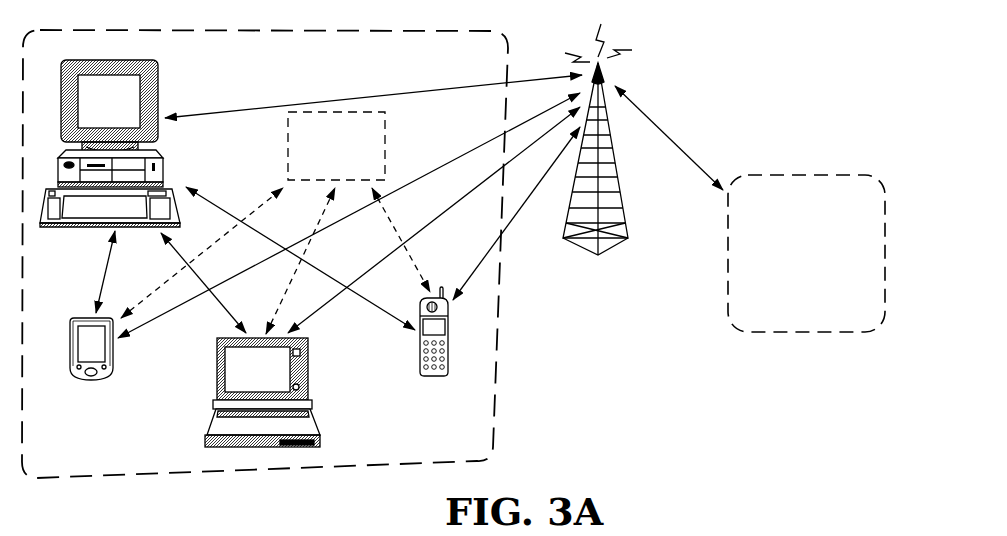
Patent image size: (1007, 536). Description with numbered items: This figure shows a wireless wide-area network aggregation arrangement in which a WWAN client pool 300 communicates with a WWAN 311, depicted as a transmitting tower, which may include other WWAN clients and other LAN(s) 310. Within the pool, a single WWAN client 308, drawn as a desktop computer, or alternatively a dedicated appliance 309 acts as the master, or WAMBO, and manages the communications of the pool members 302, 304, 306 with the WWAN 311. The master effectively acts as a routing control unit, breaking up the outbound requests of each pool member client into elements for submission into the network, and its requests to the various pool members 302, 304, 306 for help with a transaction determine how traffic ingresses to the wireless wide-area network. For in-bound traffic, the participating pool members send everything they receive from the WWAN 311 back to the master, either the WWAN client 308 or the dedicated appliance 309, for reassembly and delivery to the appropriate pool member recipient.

The WWAN client pool 300 is at (502, 387).
The pool member 302 is at (455, 331).
The pool member 304 is at (278, 392).
The pool member 306 is at (79, 340).
The WWAN client 308 is at (110, 134).
The dedicated appliance 309 is at (392, 142).
The LAN(s) 310 is at (806, 243).
The WWAN 311 is at (718, 115).